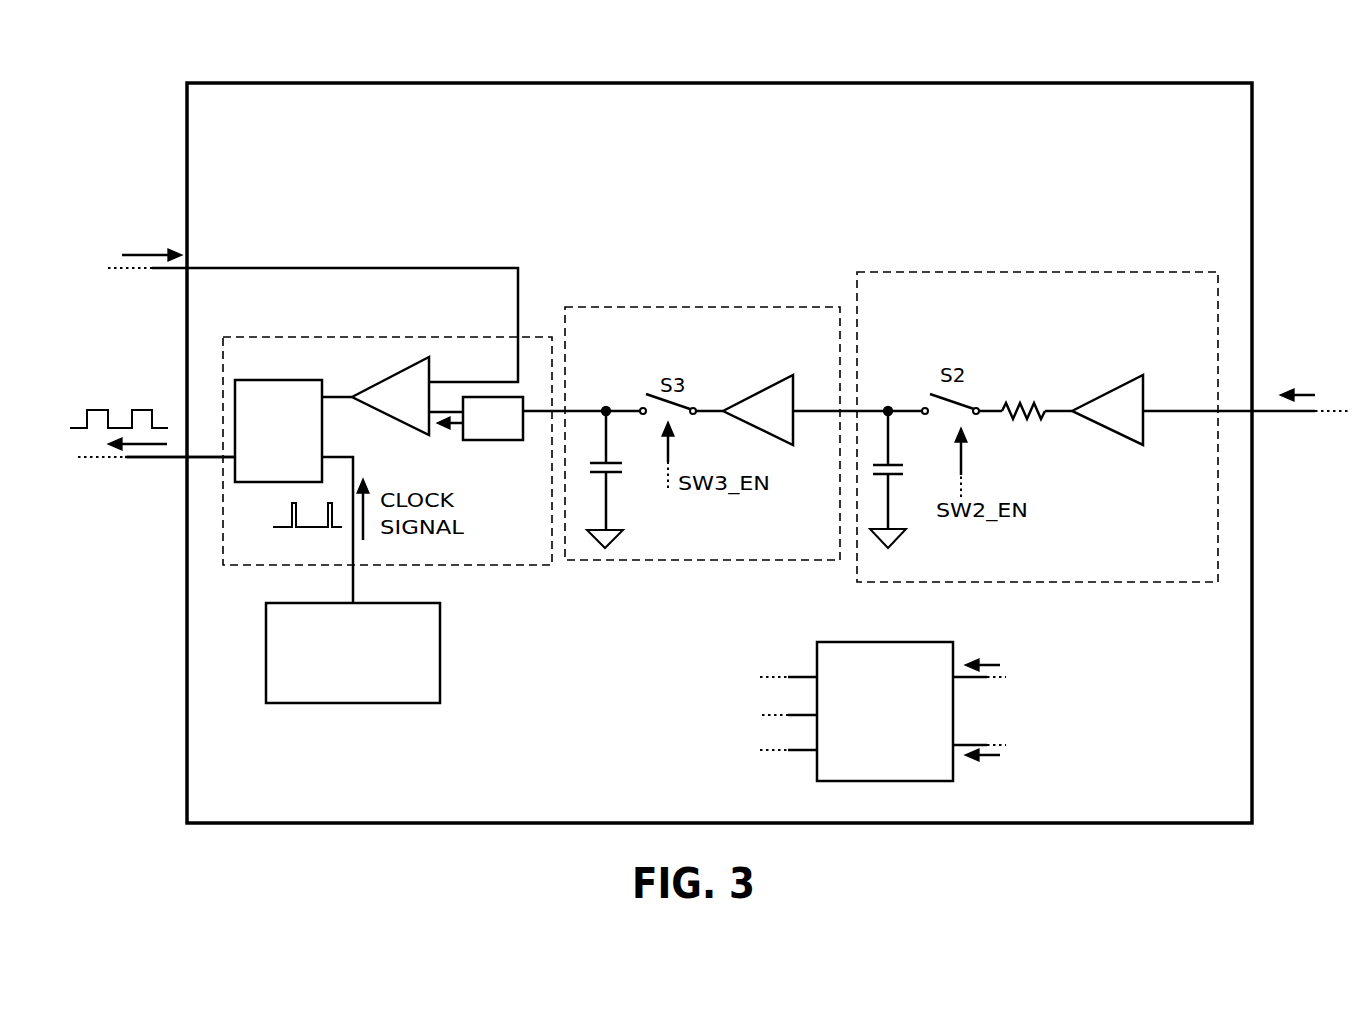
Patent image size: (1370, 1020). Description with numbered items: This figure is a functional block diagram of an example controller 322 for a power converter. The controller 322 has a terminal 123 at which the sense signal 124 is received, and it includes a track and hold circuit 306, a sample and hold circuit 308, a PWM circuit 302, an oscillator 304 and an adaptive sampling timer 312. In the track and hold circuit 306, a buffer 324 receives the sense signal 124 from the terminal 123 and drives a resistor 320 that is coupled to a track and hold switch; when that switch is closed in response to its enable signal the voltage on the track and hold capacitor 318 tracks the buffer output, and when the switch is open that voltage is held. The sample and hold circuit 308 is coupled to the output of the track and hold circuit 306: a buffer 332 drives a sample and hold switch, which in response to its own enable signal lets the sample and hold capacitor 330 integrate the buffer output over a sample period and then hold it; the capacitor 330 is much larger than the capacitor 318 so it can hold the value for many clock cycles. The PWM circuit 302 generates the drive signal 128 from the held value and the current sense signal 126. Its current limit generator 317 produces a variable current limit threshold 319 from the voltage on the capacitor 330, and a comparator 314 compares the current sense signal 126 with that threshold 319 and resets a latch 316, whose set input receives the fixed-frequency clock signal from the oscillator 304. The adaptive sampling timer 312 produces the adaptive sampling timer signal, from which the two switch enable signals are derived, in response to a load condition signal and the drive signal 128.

The terminal 123 is at (1280, 418).
The sense signal USENSE 124 is at (1290, 352).
The current sense signal 126 is at (88, 188).
The drive signal 128 is at (136, 393).
The PWM circuit 302 is at (280, 336).
The oscillator 304 is at (265, 652).
The track and hold circuit 306 is at (1038, 272).
The sample and hold circuit 308 is at (672, 306).
The adaptive sampling timer 312 is at (849, 636).
The comparator 314 is at (367, 385).
The latch 316 is at (325, 437).
The current limit generator 317 is at (512, 443).
The track and hold capacitor 318 is at (906, 467).
The variable current limit threshold 319 is at (449, 430).
The resistor 320 is at (1028, 396).
The controller 322 is at (182, 91).
The buffer 324 is at (1106, 386).
The sample and hold capacitor 330 is at (626, 469).
The buffer 332 is at (759, 397).